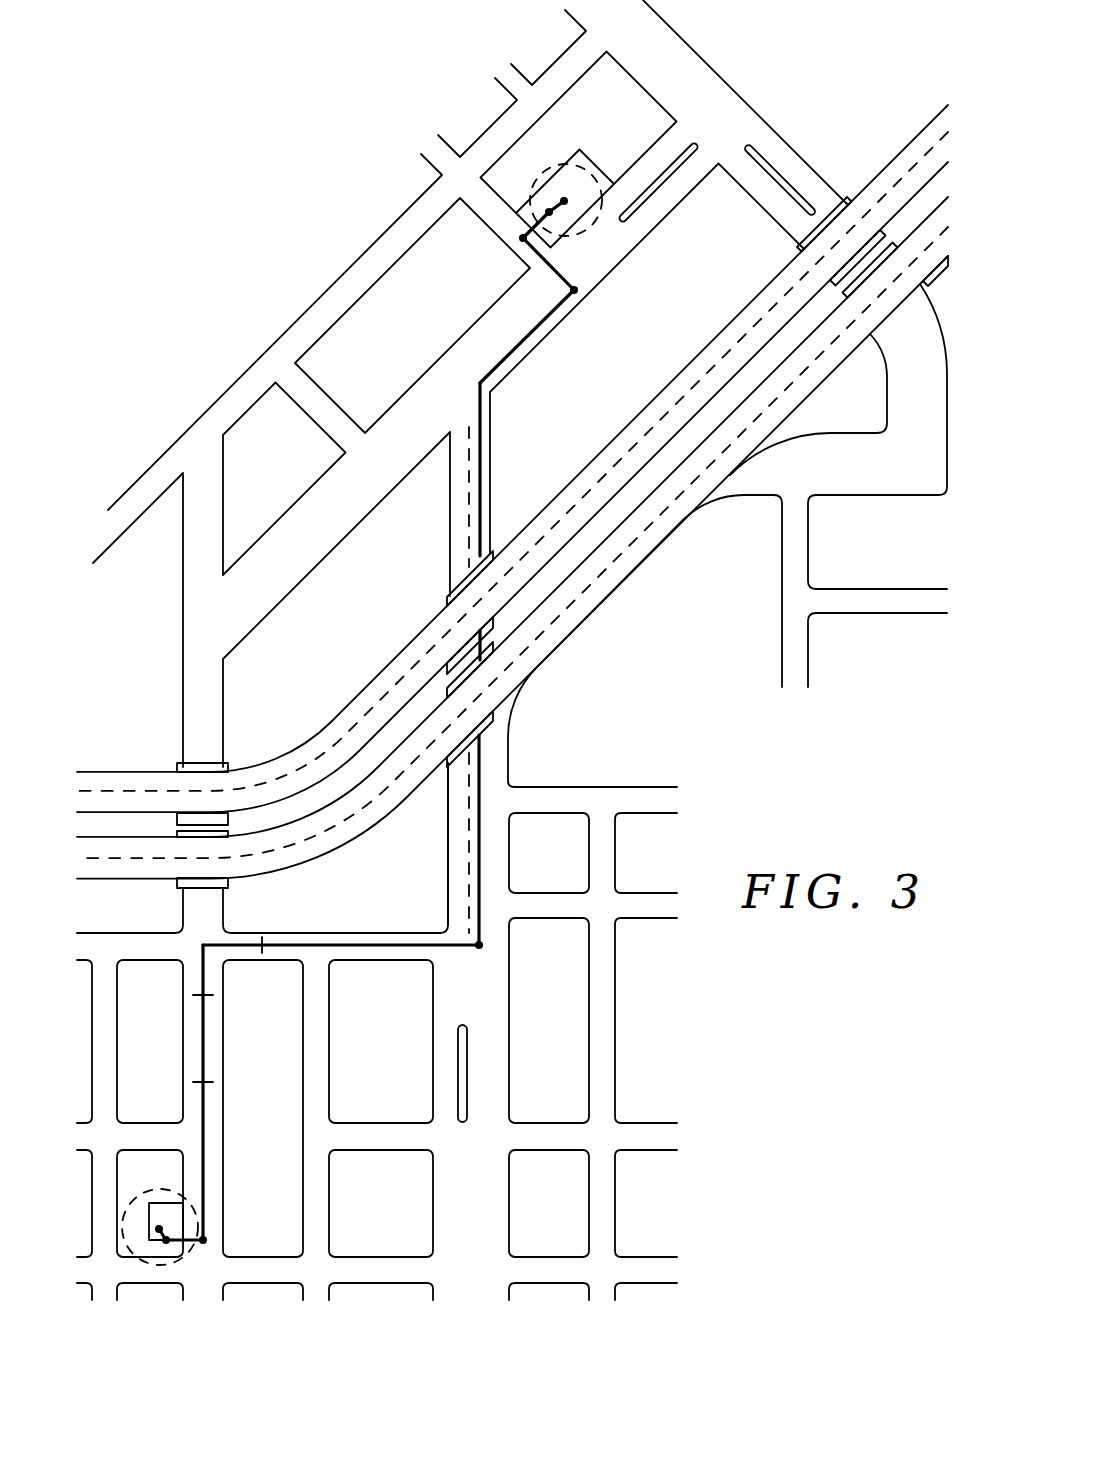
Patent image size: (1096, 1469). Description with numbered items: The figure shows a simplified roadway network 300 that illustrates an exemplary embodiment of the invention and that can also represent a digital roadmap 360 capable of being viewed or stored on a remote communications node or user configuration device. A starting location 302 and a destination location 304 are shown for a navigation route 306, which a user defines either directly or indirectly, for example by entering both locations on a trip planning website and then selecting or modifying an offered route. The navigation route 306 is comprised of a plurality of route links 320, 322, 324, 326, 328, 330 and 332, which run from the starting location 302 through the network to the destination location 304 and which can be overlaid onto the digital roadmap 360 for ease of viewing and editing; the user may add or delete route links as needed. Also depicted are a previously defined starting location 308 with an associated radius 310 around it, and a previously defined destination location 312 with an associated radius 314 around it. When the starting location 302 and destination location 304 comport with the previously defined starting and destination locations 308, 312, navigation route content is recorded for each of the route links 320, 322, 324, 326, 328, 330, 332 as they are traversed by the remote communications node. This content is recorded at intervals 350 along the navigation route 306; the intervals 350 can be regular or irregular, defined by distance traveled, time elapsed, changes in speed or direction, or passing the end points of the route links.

The simplified roadway network 300 is at (818, 850).
The starting location 302 is at (162, 1244).
The destination location 304 is at (546, 209).
The navigation route 306 is at (447, 889).
The previously defined starting location 308 is at (157, 1203).
The radius 310 is at (137, 1202).
The previously defined destination location 312 is at (568, 198).
The radius 314 is at (556, 164).
The route link 320 is at (190, 1247).
The route link 322 is at (204, 1133).
The route link 324 is at (357, 944).
The route link 326 is at (481, 804).
The route link 328 is at (482, 458).
The route link 330 is at (547, 266).
The route link 332 is at (520, 237).
The intervals 350 is at (280, 975).
The digital roadmap 360 is at (617, 982).